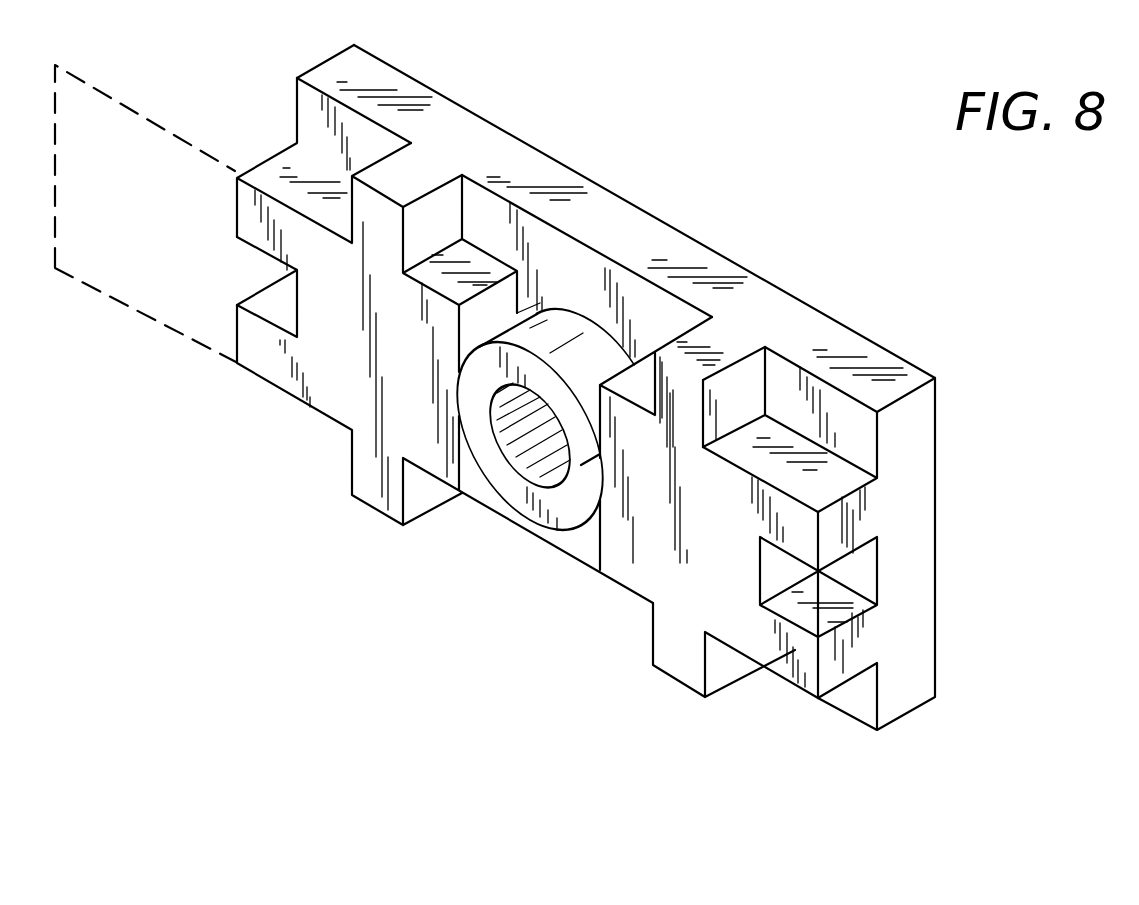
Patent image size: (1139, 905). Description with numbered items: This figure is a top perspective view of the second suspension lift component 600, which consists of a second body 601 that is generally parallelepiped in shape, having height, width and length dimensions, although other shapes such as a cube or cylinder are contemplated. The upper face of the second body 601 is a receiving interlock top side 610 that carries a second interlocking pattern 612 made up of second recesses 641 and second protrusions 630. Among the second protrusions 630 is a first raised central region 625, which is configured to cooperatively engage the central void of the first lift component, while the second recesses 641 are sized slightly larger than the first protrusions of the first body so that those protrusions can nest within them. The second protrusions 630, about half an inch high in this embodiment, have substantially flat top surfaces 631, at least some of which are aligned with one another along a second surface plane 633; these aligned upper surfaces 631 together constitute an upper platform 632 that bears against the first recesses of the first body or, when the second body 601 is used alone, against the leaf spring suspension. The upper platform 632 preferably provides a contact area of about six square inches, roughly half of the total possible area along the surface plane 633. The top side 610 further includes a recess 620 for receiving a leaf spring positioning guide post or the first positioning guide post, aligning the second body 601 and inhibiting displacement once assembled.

The second suspension lift component 600 is at (680, 193).
The second body 601 is at (528, 165).
The receiving interlock top side 610 is at (332, 337).
The second interlocking pattern 612 is at (670, 313).
The recess 620 is at (513, 455).
The first raised central region 625 is at (693, 527).
The second protrusions 630 is at (795, 650).
The flat top surfaces 631 is at (675, 653).
The upper platform 632 is at (248, 342).
The second surface plane 633 is at (140, 193).
The second recess 641 is at (858, 437).